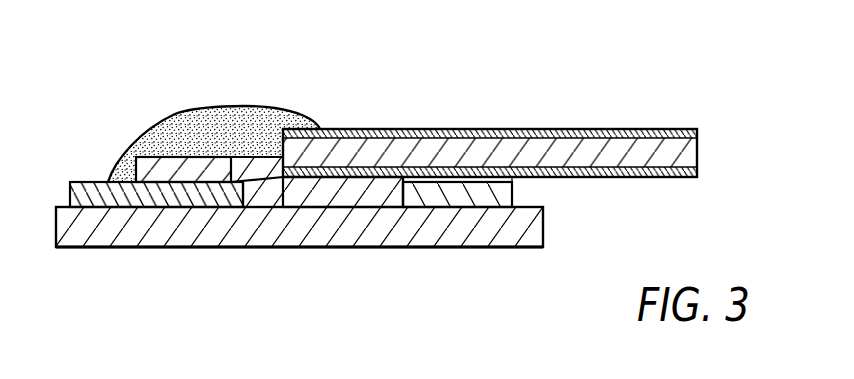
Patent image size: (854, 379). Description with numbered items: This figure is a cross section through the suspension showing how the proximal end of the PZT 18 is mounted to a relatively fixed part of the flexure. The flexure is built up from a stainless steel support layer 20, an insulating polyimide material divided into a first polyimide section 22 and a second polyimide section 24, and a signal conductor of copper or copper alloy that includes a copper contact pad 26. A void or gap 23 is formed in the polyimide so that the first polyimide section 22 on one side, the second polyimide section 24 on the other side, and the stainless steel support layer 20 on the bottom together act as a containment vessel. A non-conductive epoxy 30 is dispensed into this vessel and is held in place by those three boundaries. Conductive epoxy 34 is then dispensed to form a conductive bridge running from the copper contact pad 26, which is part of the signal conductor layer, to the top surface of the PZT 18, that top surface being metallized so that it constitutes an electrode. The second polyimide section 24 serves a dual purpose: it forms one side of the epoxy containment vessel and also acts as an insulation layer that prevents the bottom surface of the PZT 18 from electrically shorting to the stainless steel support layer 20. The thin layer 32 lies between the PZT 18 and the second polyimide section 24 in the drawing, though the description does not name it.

The PZT 18 is at (440, 150).
The support layer 20 is at (465, 228).
The first polyimide section 22 is at (115, 195).
The void or gap 23 is at (283, 193).
The second polyimide section 24 is at (512, 193).
The copper contact pad 26 is at (153, 170).
The non-conductive epoxy 30 is at (308, 193).
The adhesive gap layer 32 is at (513, 181).
The conductive epoxy 34 is at (237, 125).